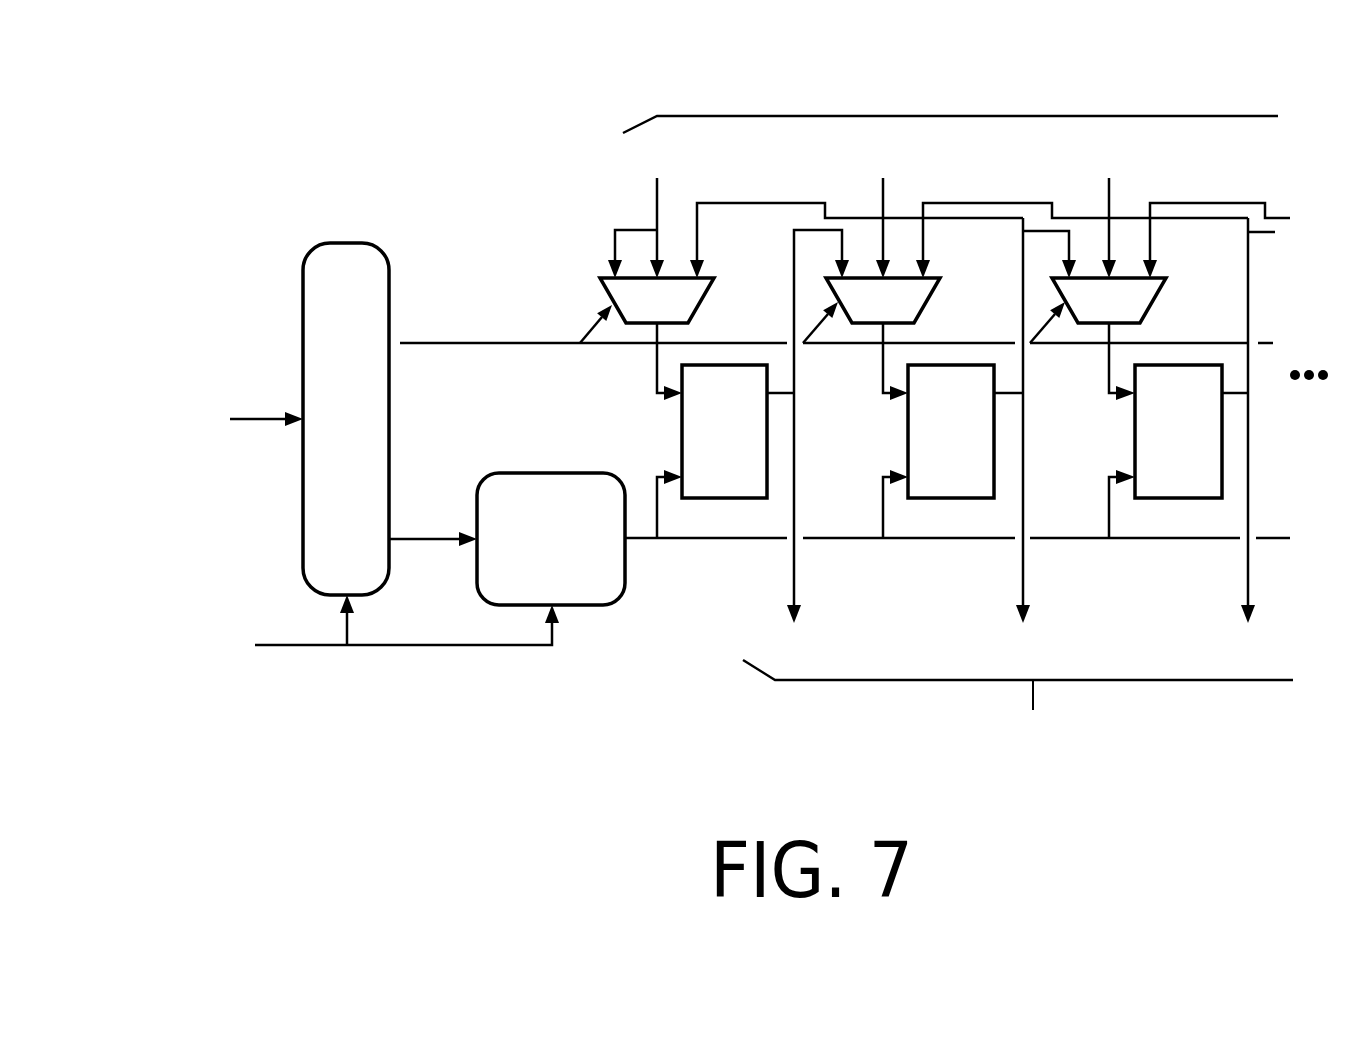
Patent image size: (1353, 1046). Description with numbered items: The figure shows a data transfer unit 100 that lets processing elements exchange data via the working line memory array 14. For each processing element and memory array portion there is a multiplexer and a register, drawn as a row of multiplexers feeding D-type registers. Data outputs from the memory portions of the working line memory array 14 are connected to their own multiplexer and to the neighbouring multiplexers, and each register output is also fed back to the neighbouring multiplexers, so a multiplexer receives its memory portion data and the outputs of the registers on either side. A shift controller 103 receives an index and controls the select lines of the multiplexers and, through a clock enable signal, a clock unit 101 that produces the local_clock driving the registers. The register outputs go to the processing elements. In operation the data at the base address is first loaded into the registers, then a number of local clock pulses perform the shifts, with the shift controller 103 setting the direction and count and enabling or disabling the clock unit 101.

The clock gating / shift register circuit 100 is at (198, 129).
The clock unit 101 is at (550, 473).
The shift controller 103 is at (303, 530).
The working line memory array 14 is at (968, 116).